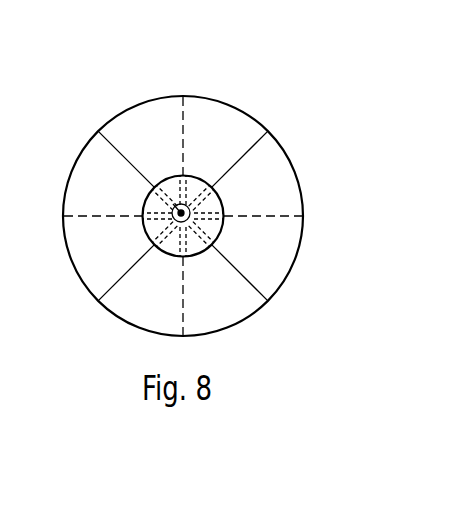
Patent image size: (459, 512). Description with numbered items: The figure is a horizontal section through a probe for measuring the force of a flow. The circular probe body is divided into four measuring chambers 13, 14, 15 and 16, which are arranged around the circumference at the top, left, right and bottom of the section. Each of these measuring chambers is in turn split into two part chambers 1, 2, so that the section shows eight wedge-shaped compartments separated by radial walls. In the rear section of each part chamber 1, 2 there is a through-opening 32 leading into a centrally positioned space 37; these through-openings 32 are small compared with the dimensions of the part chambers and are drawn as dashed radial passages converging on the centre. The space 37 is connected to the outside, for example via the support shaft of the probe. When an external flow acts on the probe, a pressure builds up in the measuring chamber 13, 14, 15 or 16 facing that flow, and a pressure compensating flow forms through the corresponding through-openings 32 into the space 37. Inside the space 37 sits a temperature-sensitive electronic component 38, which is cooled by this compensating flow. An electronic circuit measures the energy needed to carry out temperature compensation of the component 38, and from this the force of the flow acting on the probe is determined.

The part chamber 1 is at (237, 128).
The part chamber 2 is at (153, 122).
The measuring chamber 13 is at (302, 206).
The measuring chamber 14 is at (223, 97).
The measuring chamber 15 is at (86, 146).
The measuring chamber 16 is at (176, 337).
The through-opening 32 is at (200, 216).
The centrally positioned space 37 is at (172, 177).
The temperature-sensitive electronic component 38 is at (160, 181).